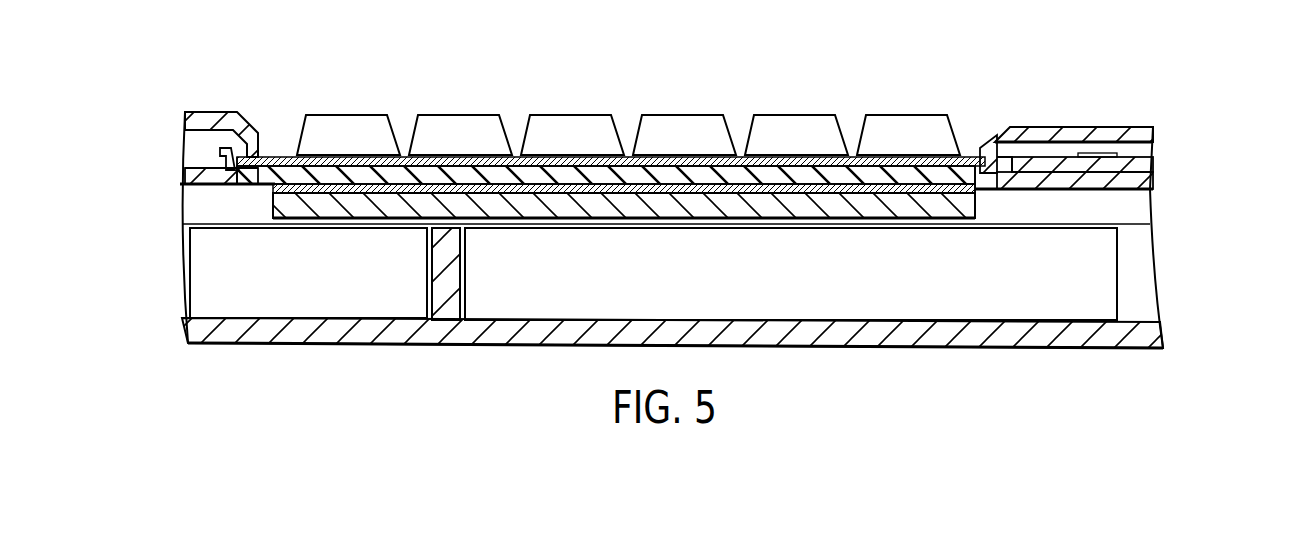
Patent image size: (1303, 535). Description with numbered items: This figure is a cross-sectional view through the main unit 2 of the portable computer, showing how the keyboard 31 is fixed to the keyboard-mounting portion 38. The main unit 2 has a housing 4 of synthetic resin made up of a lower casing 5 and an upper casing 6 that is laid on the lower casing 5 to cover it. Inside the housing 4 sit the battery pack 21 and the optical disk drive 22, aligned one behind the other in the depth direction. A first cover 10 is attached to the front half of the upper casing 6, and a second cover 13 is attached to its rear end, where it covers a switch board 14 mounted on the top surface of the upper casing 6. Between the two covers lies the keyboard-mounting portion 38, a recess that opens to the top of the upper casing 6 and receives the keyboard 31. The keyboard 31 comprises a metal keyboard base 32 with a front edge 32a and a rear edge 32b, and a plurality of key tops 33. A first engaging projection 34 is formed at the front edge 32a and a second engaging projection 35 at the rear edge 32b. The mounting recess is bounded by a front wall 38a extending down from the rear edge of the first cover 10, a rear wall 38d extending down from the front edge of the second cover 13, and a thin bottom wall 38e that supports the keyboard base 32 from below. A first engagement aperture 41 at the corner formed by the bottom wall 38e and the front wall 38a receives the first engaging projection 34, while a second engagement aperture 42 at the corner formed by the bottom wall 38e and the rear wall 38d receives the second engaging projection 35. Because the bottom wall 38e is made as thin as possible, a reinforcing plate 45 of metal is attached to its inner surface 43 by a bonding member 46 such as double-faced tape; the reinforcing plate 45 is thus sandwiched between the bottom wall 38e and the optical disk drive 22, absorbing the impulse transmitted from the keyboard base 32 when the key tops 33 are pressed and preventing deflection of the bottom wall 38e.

The main unit 2 is at (1047, 358).
The housing 4 is at (1208, 202).
The lower casing 5 is at (1140, 328).
The upper casing 6 is at (1138, 190).
The first cover 10 is at (217, 112).
The second cover 13 is at (1093, 130).
The switch board 14 is at (1125, 160).
The battery pack 21 is at (315, 300).
The optical disk drive 22 is at (882, 303).
The keyboard 31 is at (628, 102).
The keyboard base 32 is at (710, 172).
The front edge 32a is at (270, 163).
The rear edge 32b is at (977, 170).
The key tops 33 is at (542, 123).
The first engaging projection 34 is at (242, 186).
The second engaging projection 35 is at (997, 165).
The keyboard-mounting portion 38 is at (285, 152).
The front wall 38a is at (253, 156).
The rear wall 38d is at (988, 140).
The bottom wall 38e is at (603, 178).
The first engagement aperture 41 is at (222, 151).
The second engagement aperture 42 is at (972, 157).
The inner surface 43 is at (546, 192).
The reinforcing plate 45 is at (808, 207).
The bonding member 46 is at (505, 186).